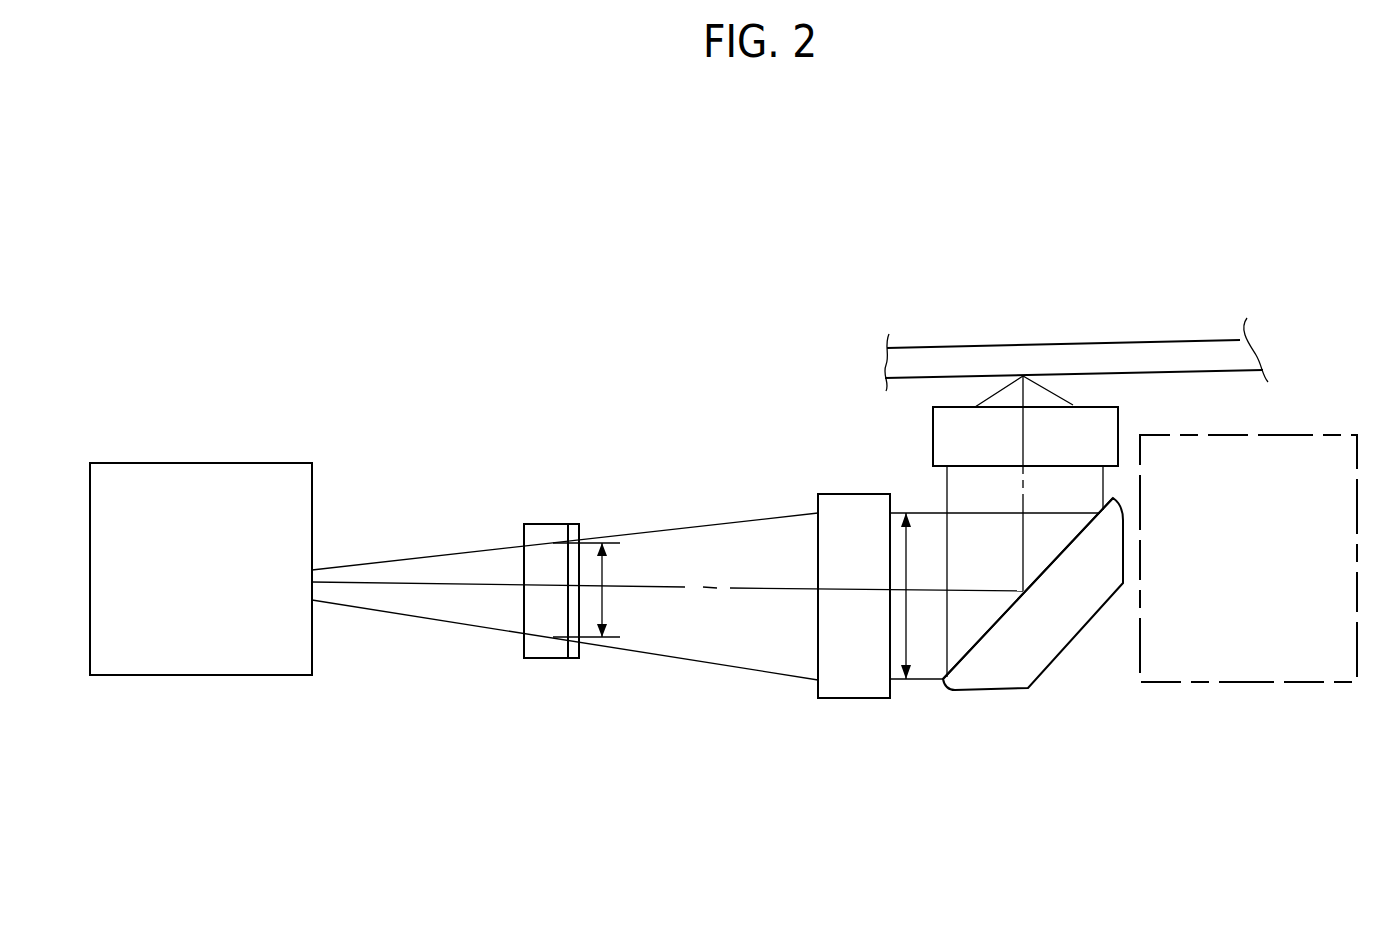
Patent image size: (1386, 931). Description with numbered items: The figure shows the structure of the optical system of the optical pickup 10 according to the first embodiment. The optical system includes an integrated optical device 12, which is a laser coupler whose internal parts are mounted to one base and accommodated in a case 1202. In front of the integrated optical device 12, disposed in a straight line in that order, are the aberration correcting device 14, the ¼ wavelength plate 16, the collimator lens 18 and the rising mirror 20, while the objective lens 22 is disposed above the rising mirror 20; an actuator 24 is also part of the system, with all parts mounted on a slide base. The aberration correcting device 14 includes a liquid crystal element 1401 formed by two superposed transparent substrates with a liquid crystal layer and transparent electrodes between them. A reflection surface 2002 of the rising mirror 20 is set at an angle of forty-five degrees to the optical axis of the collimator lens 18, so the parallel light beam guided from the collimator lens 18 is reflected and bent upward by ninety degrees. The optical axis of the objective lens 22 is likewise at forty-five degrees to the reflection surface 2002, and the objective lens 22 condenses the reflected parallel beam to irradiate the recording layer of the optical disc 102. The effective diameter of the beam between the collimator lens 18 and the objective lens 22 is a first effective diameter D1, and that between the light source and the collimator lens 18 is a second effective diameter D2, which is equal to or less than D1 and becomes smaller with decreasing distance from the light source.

The optical pickup 10 is at (701, 208).
The integrated optical device 12 is at (207, 434).
The case 1202 is at (290, 463).
The aberration correcting device 14 is at (549, 524).
The liquid crystal element 1401 is at (523, 535).
The ¼ wavelength plate 16 is at (583, 532).
The second effective diameter D2 is at (602, 600).
The collimator lens 18 is at (835, 698).
The first effective diameter D1 is at (906, 554).
The rising mirror 20 is at (1060, 628).
The reflection surface 2002 is at (982, 643).
The objective lens 22 is at (1100, 403).
The optical disc 102 is at (1208, 340).
The actuator 24 is at (1253, 683).